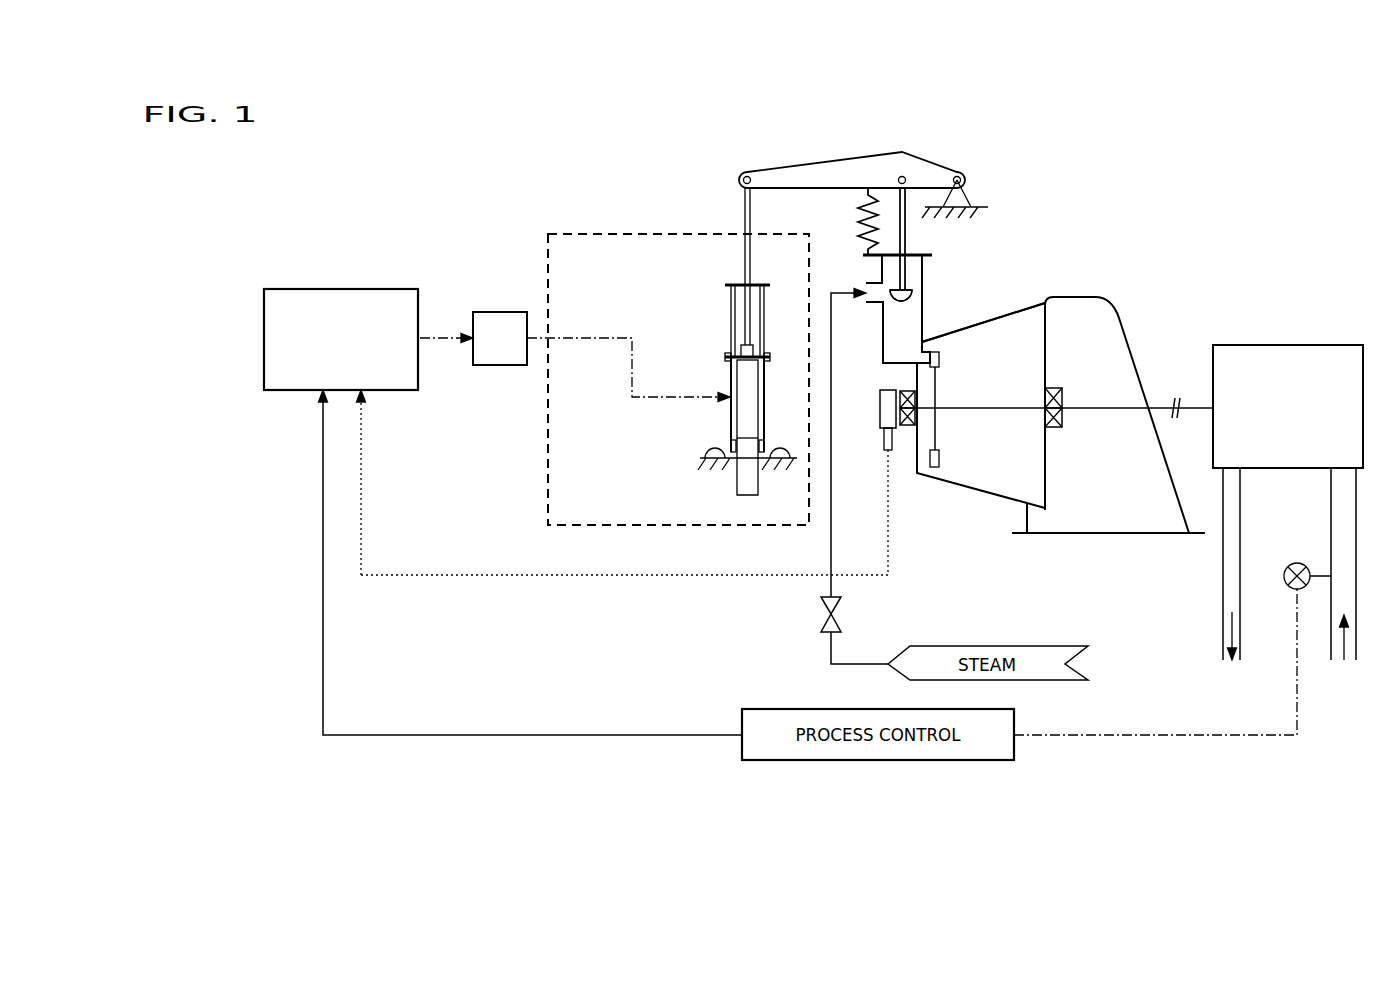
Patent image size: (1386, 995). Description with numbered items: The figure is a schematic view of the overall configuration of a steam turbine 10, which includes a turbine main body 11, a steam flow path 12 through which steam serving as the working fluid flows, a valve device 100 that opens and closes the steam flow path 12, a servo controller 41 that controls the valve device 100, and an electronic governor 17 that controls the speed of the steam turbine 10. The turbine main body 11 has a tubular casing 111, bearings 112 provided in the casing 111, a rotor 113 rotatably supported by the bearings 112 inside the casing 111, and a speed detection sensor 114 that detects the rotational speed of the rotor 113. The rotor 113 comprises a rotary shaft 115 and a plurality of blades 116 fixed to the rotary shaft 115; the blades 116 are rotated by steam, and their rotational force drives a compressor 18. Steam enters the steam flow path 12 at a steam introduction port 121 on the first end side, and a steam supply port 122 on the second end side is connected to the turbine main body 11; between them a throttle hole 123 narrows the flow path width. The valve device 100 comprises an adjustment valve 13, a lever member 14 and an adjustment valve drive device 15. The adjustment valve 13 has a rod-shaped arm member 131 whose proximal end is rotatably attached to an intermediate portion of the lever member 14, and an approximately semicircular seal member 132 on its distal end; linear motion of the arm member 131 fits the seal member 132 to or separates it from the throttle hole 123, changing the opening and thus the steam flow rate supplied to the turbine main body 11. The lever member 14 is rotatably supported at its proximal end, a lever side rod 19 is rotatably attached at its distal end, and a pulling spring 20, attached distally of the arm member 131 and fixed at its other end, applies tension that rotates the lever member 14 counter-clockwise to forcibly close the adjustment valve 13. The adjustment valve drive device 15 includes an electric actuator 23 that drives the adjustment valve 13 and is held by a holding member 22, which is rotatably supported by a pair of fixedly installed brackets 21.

The steam turbine 10 is at (1143, 150).
The valve device 100 is at (713, 125).
The turbine main body 11 is at (1097, 282).
The casing 111 is at (1015, 322).
The bearings 112 is at (908, 430).
The rotor 113 is at (985, 420).
The speed detection sensor 114 is at (886, 436).
The rotary shaft 115 is at (1108, 412).
The blades 116 is at (942, 380).
The steam flow path 12 is at (940, 268).
The steam introduction port 121 is at (856, 308).
The steam supply port 122 is at (938, 335).
The throttle hole 123 is at (895, 325).
The adjustment valve 13 is at (922, 236).
The arm member 131 is at (912, 200).
The seal member 132 is at (893, 288).
The lever member 14 is at (812, 143).
The adjustment valve drive device 15 is at (632, 222).
The electronic governor 17 is at (264, 338).
The compressor 18 is at (1292, 345).
The lever side rod 19 is at (752, 207).
The pulling spring 20 is at (876, 212).
The brackets 21 is at (715, 466).
The holding member 22 is at (729, 305).
The electric actuator 23 is at (745, 413).
The servo controller 41 is at (503, 312).